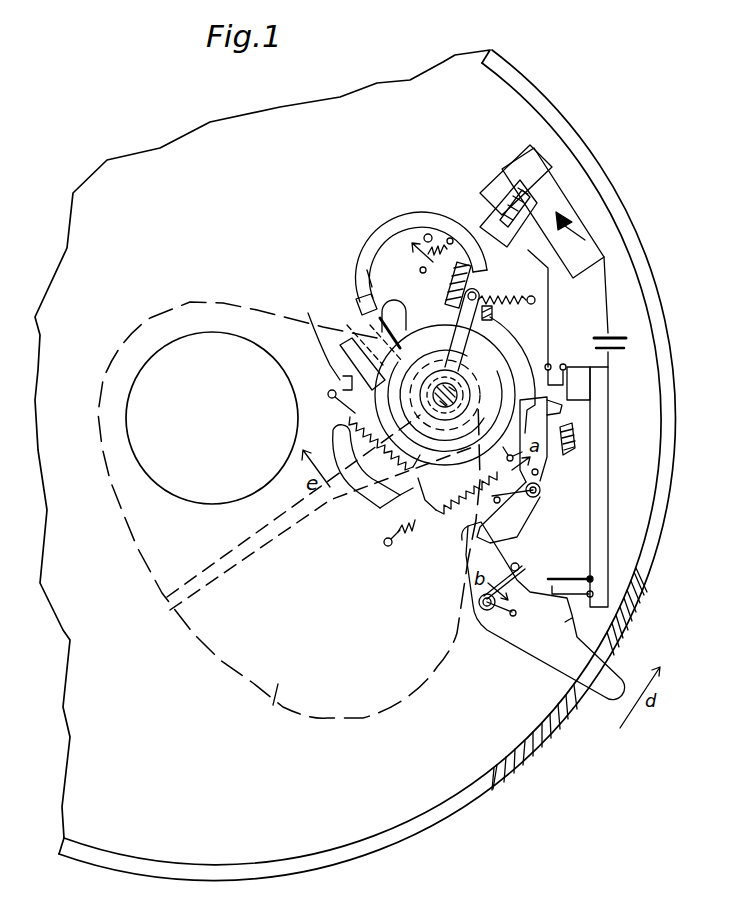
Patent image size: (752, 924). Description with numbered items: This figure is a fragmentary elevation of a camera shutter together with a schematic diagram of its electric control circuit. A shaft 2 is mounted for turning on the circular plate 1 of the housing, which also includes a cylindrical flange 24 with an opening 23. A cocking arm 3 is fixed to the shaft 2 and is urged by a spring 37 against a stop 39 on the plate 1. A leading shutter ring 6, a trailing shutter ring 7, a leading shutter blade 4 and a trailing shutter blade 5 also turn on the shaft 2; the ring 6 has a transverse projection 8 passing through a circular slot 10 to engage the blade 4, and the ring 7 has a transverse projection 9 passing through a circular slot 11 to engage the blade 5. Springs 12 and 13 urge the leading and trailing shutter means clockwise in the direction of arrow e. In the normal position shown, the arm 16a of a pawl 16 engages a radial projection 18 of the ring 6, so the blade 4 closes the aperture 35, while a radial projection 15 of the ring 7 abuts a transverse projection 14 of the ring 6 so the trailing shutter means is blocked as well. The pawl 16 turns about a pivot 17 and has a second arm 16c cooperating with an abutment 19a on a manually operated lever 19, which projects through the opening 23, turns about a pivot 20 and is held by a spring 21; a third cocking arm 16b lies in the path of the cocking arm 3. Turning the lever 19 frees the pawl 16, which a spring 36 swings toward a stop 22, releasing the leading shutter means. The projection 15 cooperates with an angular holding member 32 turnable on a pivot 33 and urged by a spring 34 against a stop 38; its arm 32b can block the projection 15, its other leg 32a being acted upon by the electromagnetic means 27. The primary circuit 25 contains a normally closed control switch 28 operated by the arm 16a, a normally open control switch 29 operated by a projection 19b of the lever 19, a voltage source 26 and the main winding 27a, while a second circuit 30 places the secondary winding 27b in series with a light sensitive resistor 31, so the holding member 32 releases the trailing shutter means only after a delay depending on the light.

The circular plate 1 is at (497, 88).
The shaft 2 is at (458, 393).
The cocking lever 3 is at (458, 357).
The leading shutter blade 4 is at (208, 308).
The trailing shutter blade 5 is at (269, 710).
The leading shutter ring 6 is at (440, 328).
The trailing shutter ring 7 is at (406, 326).
The transverse projection 8 is at (343, 380).
The transverse projection 9 is at (392, 496).
The circular slot 10 is at (319, 337).
The circular slot 11 is at (366, 473).
The spring 12 is at (420, 535).
The spring 13 is at (352, 418).
The transverse projection 14 is at (358, 300).
The radial projection 15 is at (367, 332).
The pawl 16 is at (528, 513).
The arm of pawl 16a is at (560, 413).
The cocking arm 16b is at (366, 542).
The second arm of pawl 16c is at (498, 537).
The pivot 17 is at (540, 492).
The radial projection 18 is at (528, 363).
The manually operated lever 19 is at (517, 647).
The abutment 19a is at (462, 530).
The projection of lever 19b is at (588, 630).
The pivot 20 is at (487, 630).
The spring 21 is at (522, 568).
The stop 22 is at (575, 430).
The opening 23 is at (600, 650).
The cylindrical flange 24 is at (628, 598).
The primary circuit 25 is at (596, 492).
The source of voltage 26 is at (612, 340).
The electromagnetic means 27 is at (540, 244).
The main winding 27a is at (505, 222).
The secondary winding 27b is at (500, 178).
The normally closed control switch 28 is at (563, 364).
The normally open control switch 29 is at (573, 579).
The second circuit 30 is at (578, 172).
The light sensitive resistor 31 is at (585, 240).
The holding member 32 is at (400, 258).
The pawl end 32a is at (473, 240).
The arm of holding member 32b is at (362, 268).
The pivot 33 is at (427, 234).
The spring 34 is at (433, 262).
The aperture 35 is at (153, 478).
The spring 36 is at (538, 473).
The spring 37 is at (536, 300).
The stop 38 is at (467, 283).
The stop 39 is at (495, 313).